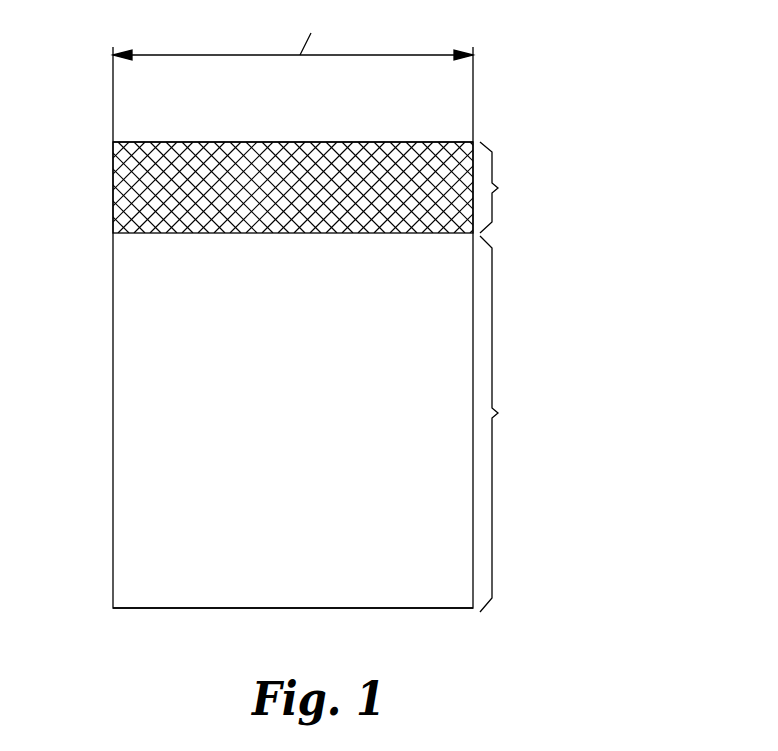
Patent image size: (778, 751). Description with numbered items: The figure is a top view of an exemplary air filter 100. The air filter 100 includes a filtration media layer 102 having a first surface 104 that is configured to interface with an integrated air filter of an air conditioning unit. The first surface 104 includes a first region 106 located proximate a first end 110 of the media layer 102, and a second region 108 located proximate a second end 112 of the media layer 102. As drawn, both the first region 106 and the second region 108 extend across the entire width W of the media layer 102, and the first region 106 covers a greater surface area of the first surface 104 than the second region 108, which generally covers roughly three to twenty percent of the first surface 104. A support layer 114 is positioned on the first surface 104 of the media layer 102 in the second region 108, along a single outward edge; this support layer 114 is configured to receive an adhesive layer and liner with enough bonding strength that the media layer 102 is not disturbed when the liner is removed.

The air filter 100 is at (326, 339).
The filtration media layer 102 is at (112, 274).
The first surface 104 is at (128, 348).
The first region 106 is at (513, 424).
The second region 108 is at (299, 187).
The first end 110 is at (343, 609).
The second end 112 is at (304, 142).
The support layer 114 is at (211, 152).